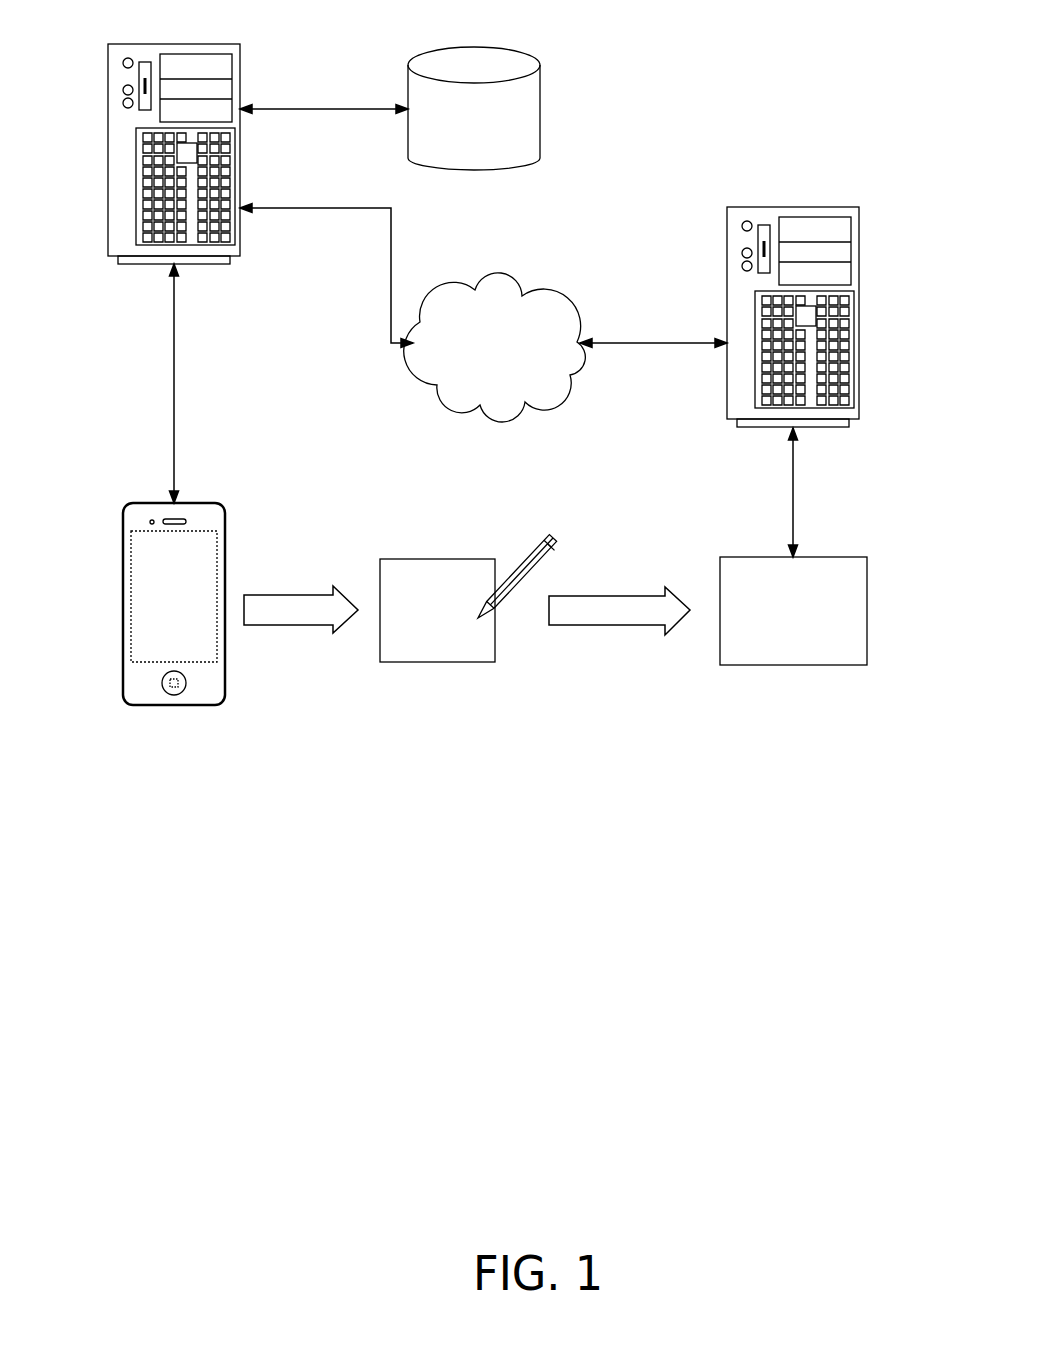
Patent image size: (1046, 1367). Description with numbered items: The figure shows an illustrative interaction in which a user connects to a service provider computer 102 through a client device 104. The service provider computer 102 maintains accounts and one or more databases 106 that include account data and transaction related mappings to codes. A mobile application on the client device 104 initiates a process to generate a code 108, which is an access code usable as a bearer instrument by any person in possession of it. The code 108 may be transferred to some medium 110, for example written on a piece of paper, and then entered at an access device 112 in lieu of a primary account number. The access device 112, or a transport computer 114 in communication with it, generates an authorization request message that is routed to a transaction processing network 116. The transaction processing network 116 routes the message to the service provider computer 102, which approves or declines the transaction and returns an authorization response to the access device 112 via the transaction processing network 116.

The service provider computer 102 is at (218, 134).
The client device 104 is at (179, 588).
The database 106 is at (474, 108).
The code 108 is at (123, 583).
The medium 110 is at (424, 617).
The access device 112 is at (749, 630).
The transport computer 114 is at (838, 299).
The transaction processing network 116 is at (495, 347).